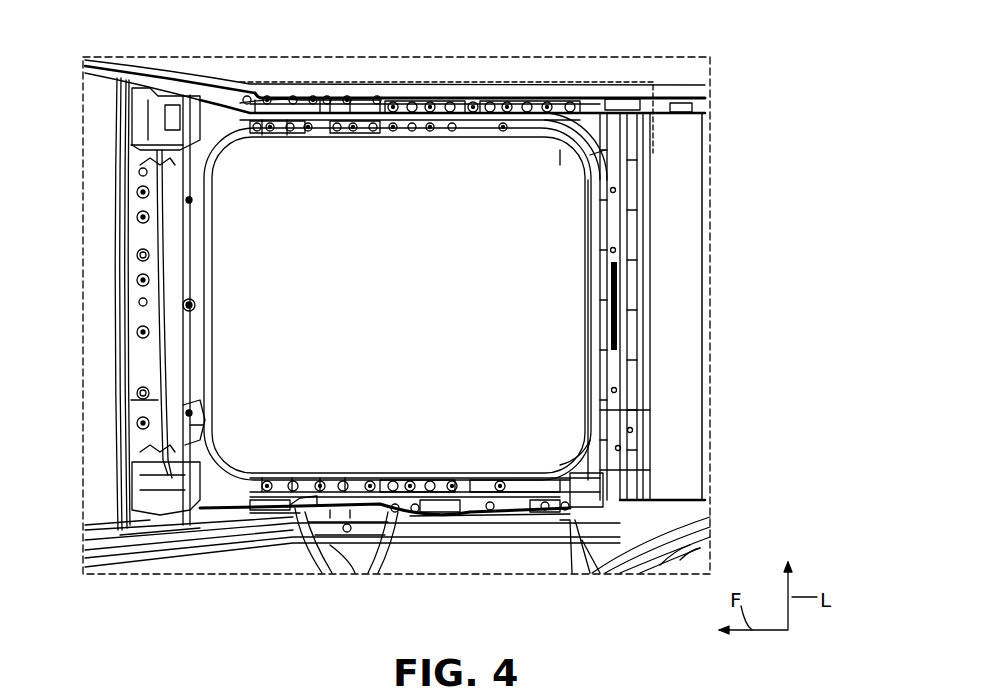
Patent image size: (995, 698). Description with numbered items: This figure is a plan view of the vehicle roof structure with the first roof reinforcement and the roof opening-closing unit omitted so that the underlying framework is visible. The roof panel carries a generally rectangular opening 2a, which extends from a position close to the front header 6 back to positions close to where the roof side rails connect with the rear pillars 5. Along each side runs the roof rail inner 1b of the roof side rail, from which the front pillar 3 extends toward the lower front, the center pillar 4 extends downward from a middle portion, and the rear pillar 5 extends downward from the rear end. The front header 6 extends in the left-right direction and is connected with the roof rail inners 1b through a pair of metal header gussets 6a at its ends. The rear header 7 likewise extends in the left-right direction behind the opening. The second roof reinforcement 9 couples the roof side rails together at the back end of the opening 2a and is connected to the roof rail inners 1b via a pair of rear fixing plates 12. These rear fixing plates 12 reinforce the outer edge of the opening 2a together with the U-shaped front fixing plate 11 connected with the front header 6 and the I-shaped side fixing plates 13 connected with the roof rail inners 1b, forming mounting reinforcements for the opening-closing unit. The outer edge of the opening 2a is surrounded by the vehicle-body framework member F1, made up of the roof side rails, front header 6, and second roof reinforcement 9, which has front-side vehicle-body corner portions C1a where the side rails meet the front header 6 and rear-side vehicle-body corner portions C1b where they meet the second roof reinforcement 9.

The front-side vehicle-body corner portion C1a is at (170, 60).
The rear-side vehicle-body corner portion C1b is at (580, 80).
The vehicle-body framework member F1 is at (295, 82).
The roof rail inner 1b is at (490, 100).
The opening 2a is at (214, 234).
The front pillar 3 is at (85, 573).
The center pillar 4 is at (378, 567).
The rear pillar 5 is at (687, 563).
The front header 6 is at (115, 200).
The header gusset 6a is at (127, 112).
The rear header 7 is at (708, 240).
The second roof reinforcement 9 is at (584, 283).
The front fixing plate 11 is at (202, 433).
The rear fixing plate 12 is at (593, 157).
The side fixing plate 13 is at (308, 127).